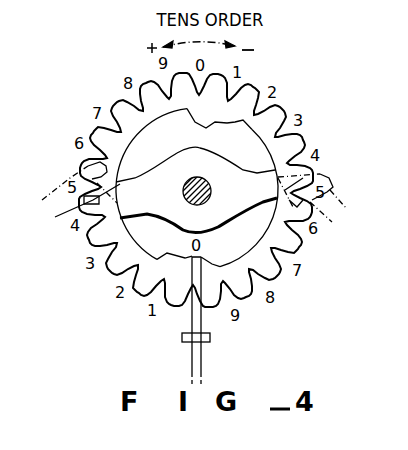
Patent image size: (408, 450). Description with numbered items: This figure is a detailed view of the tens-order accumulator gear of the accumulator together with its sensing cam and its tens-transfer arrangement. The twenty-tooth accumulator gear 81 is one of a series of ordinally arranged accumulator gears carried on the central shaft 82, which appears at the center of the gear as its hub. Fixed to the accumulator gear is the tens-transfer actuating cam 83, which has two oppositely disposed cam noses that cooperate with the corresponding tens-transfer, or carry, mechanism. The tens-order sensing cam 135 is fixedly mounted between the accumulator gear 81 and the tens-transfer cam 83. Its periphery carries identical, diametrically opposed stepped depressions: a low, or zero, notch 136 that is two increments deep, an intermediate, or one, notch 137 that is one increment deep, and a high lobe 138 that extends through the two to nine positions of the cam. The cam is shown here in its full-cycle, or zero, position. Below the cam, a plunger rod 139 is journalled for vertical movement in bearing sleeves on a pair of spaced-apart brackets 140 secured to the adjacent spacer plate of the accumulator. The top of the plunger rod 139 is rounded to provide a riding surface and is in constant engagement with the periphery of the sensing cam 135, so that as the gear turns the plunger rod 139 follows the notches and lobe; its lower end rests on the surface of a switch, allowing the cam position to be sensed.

The accumulator gear 81 is at (254, 87).
The central shaft 82 is at (213, 188).
The tens-transfer actuating cam 83 is at (164, 209).
The tens-order sensing cam 135 is at (258, 226).
The low notch 136 is at (206, 129).
The intermediate notch 137 is at (229, 125).
The high lobe 138 is at (118, 152).
The plunger rod 139 is at (198, 322).
The brackets 140 is at (210, 338).